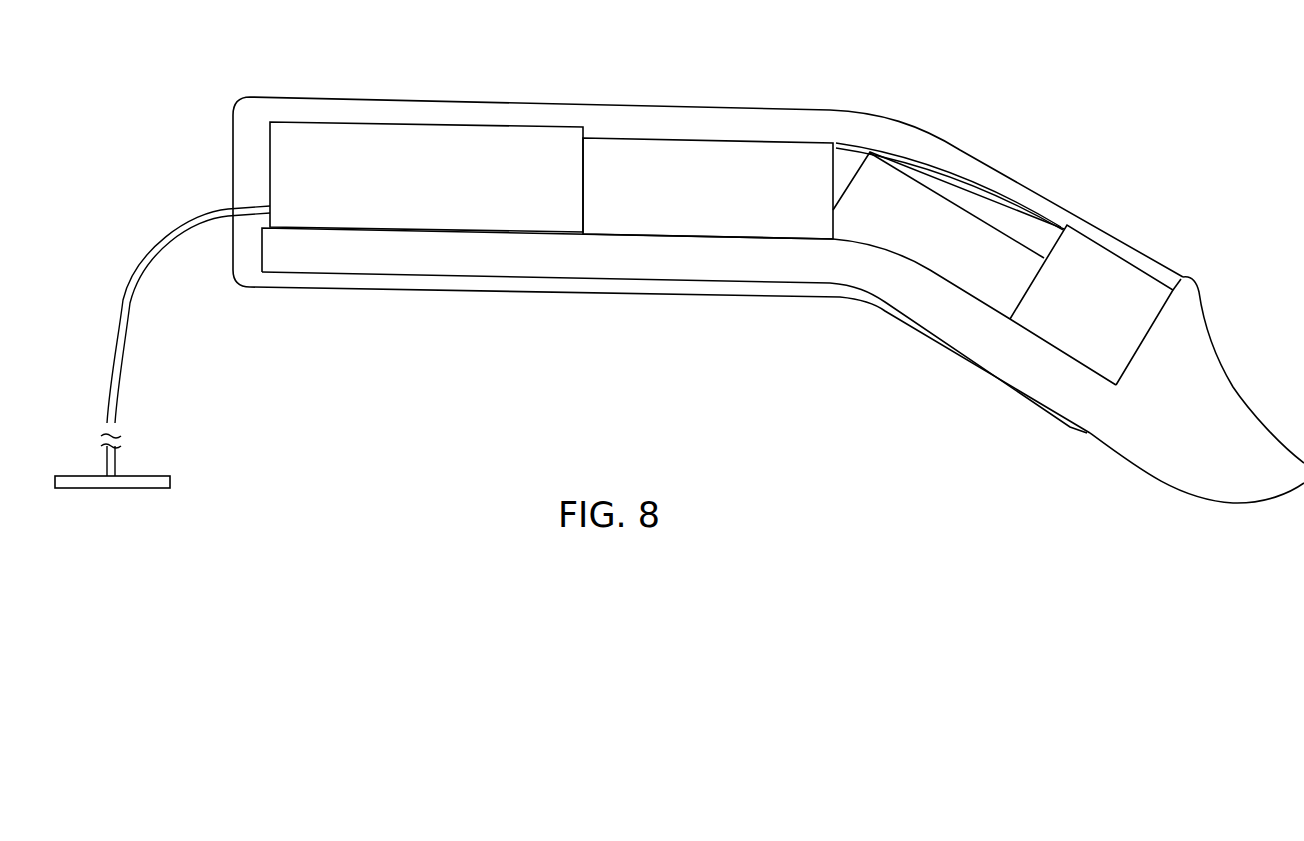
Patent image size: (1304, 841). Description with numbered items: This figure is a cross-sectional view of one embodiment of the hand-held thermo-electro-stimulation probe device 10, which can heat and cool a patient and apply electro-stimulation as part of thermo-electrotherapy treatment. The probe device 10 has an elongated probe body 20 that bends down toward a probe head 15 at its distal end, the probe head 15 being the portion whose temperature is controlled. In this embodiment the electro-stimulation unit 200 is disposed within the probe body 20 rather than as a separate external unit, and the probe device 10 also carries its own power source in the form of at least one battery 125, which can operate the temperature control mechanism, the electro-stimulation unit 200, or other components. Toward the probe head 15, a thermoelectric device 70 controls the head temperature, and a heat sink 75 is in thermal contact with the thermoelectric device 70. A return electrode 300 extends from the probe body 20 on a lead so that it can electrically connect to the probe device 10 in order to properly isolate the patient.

The probe device 10 is at (885, 79).
The probe body 20 is at (517, 289).
The probe head 15 is at (1208, 436).
The electro-stimulation unit 200 is at (447, 191).
The battery 125 is at (727, 200).
The heat sink 75 is at (953, 246).
The thermoelectric device 70 is at (1118, 336).
The return electrode 300 is at (153, 475).